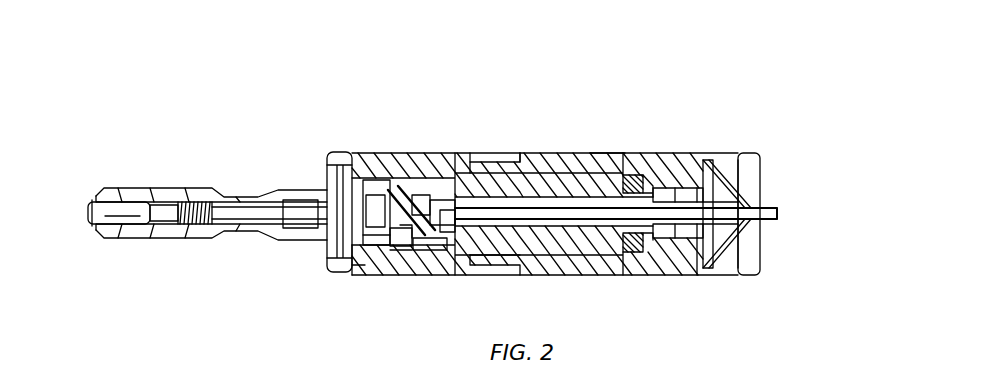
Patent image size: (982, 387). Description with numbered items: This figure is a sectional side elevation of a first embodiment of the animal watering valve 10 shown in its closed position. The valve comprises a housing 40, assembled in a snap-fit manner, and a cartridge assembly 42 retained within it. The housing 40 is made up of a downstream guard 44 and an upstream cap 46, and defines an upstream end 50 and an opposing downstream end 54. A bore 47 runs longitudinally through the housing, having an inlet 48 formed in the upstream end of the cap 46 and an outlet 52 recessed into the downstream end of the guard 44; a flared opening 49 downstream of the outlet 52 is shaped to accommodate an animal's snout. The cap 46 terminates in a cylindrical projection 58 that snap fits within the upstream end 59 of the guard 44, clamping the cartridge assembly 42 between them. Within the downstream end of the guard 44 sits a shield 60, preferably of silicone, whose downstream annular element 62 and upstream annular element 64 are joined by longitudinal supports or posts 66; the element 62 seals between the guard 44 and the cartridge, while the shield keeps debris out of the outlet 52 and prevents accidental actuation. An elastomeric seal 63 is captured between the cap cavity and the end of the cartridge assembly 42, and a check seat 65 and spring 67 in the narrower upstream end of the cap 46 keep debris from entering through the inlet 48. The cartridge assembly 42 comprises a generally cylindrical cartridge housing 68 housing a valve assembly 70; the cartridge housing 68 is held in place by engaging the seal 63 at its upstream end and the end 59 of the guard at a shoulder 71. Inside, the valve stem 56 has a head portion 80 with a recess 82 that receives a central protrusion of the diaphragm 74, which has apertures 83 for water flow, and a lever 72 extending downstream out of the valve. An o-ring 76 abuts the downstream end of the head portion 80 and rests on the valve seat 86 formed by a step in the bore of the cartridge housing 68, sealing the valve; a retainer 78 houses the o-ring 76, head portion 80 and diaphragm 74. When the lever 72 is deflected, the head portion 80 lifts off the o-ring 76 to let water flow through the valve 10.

The animal watering valve 10 is at (630, 102).
The housing 40 is at (648, 282).
The cartridge assembly 42 is at (550, 260).
The downstream guard 44 is at (705, 152).
The upstream cap 46 is at (358, 284).
The bore 47 is at (603, 157).
The inlet 48 is at (86, 204).
The flared opening 49 is at (745, 255).
The upstream end 50 is at (150, 168).
The outlet 52 is at (740, 197).
The downstream end 54 is at (805, 156).
The valve stem 56 is at (600, 250).
The cylindrical projection 58 is at (504, 160).
The upstream end of the guard 59 is at (521, 160).
The shield 60 is at (700, 256).
The downstream annular element 62 is at (728, 154).
The elastomeric seal 63 is at (330, 160).
The upstream annular element 64 is at (645, 158).
The check seat 65 is at (133, 215).
The supports or posts 66 is at (673, 158).
The spring 67 is at (197, 219).
The cartridge housing 68 is at (418, 272).
The valve assembly 70 is at (360, 275).
The shoulder 71 is at (440, 210).
The lever 72 is at (778, 222).
The diaphragm 74 is at (400, 225).
The o-ring 76 is at (432, 200).
The retainer 78 is at (371, 190).
The head portion 80 is at (432, 262).
The recess 82 is at (392, 270).
The apertures 83 is at (408, 268).
The valve seat 86 is at (465, 268).